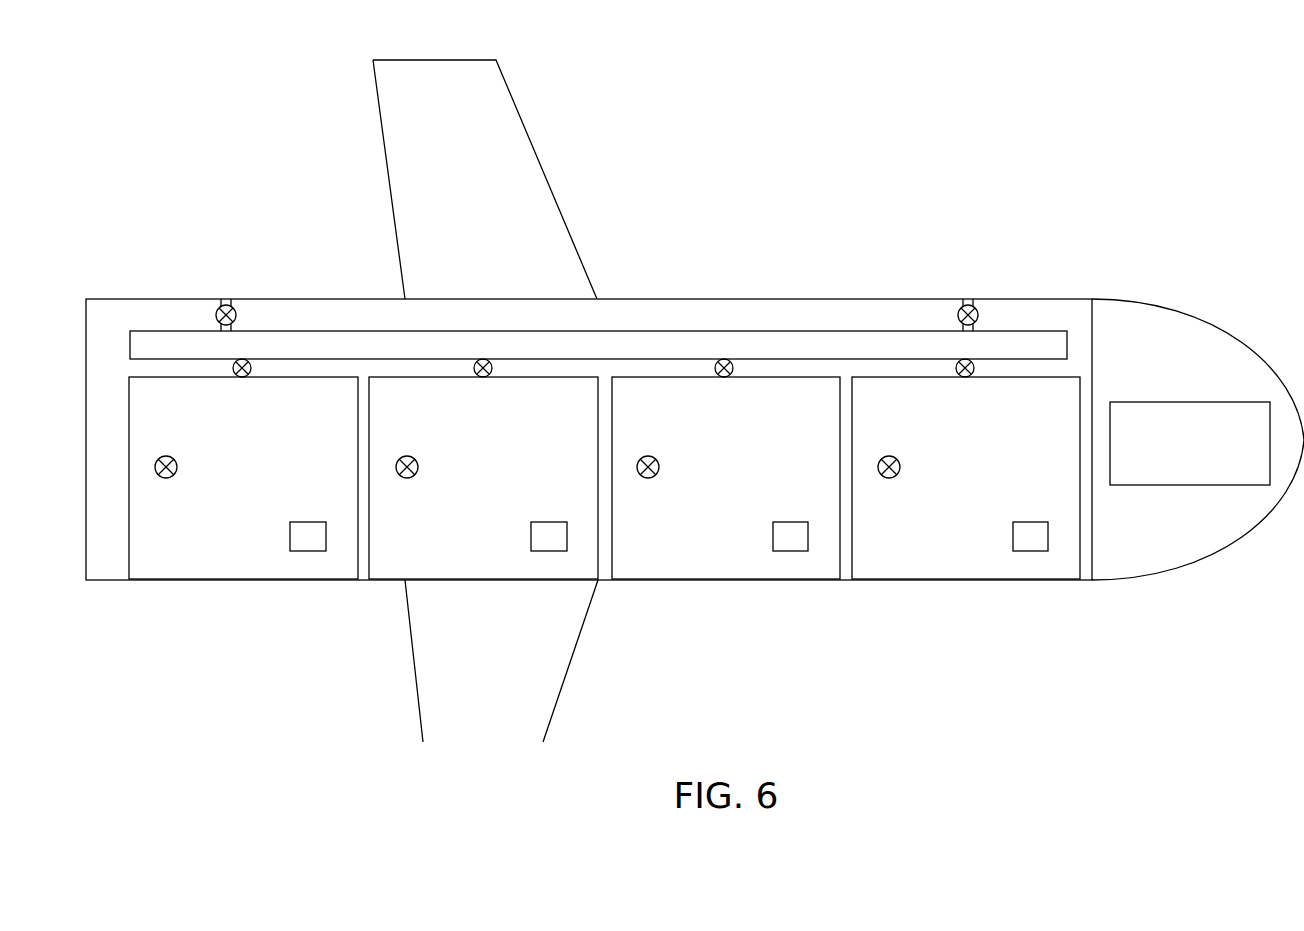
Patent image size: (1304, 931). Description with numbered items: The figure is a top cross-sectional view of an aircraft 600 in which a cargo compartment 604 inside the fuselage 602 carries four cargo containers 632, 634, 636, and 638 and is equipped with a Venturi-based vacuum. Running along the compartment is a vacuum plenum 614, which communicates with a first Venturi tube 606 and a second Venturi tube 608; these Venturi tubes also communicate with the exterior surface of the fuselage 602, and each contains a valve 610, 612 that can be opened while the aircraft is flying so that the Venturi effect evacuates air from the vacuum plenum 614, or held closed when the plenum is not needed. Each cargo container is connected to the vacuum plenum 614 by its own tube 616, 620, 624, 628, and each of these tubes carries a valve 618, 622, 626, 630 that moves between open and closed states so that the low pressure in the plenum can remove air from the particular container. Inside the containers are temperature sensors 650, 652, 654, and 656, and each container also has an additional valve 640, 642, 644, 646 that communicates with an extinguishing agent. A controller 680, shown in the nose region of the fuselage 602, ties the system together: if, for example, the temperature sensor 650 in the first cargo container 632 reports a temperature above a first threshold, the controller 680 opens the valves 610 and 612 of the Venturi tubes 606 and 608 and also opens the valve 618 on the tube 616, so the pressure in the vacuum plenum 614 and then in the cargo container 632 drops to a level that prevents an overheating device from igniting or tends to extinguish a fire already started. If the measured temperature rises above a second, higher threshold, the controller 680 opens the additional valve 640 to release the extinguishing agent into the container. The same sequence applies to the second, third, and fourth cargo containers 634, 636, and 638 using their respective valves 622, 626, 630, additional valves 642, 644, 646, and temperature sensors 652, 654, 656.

The aircraft 600 is at (992, 105).
The fuselage 602 is at (1146, 299).
The cargo compartment 604 is at (1046, 312).
The first Venturi tube 606 is at (230, 299).
The second Venturi tube 608 is at (972, 299).
The valve 610 is at (236, 315).
The valve 612 is at (958, 316).
The vacuum plenum 614 is at (568, 348).
The tube 616 is at (250, 362).
The valve 618 is at (234, 364).
The tube 620 is at (491, 362).
The valve 622 is at (475, 364).
The tube 624 is at (732, 362).
The valve 626 is at (716, 364).
The tube 628 is at (973, 362).
The valve 630 is at (957, 364).
The first cargo container 632 is at (229, 482).
The second cargo container 634 is at (469, 482).
The third cargo container 636 is at (711, 482).
The fourth cargo container 638 is at (951, 482).
The additional valve 640 is at (166, 478).
The additional valve 642 is at (407, 478).
The additional valve 644 is at (648, 478).
The additional valve 646 is at (889, 478).
The temperature sensor 650 is at (312, 551).
The temperature sensor 652 is at (553, 551).
The temperature sensor 654 is at (795, 551).
The temperature sensor 656 is at (1034, 551).
The controller 680 is at (1172, 402).